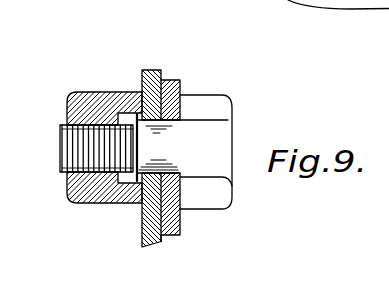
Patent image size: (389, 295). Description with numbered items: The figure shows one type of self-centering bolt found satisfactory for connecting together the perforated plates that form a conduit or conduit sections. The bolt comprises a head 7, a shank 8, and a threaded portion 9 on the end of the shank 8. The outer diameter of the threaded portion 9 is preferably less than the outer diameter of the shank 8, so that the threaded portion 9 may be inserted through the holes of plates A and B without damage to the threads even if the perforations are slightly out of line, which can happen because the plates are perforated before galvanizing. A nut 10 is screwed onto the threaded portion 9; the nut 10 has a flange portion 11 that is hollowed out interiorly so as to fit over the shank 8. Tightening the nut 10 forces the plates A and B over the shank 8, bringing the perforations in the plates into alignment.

The head 7 is at (232, 131).
The shank 8 is at (170, 137).
The threaded portion 9 is at (61, 128).
The nut 10 is at (92, 197).
The flange portion 11 is at (131, 188).
The plate A is at (143, 80).
The plate B is at (159, 146).